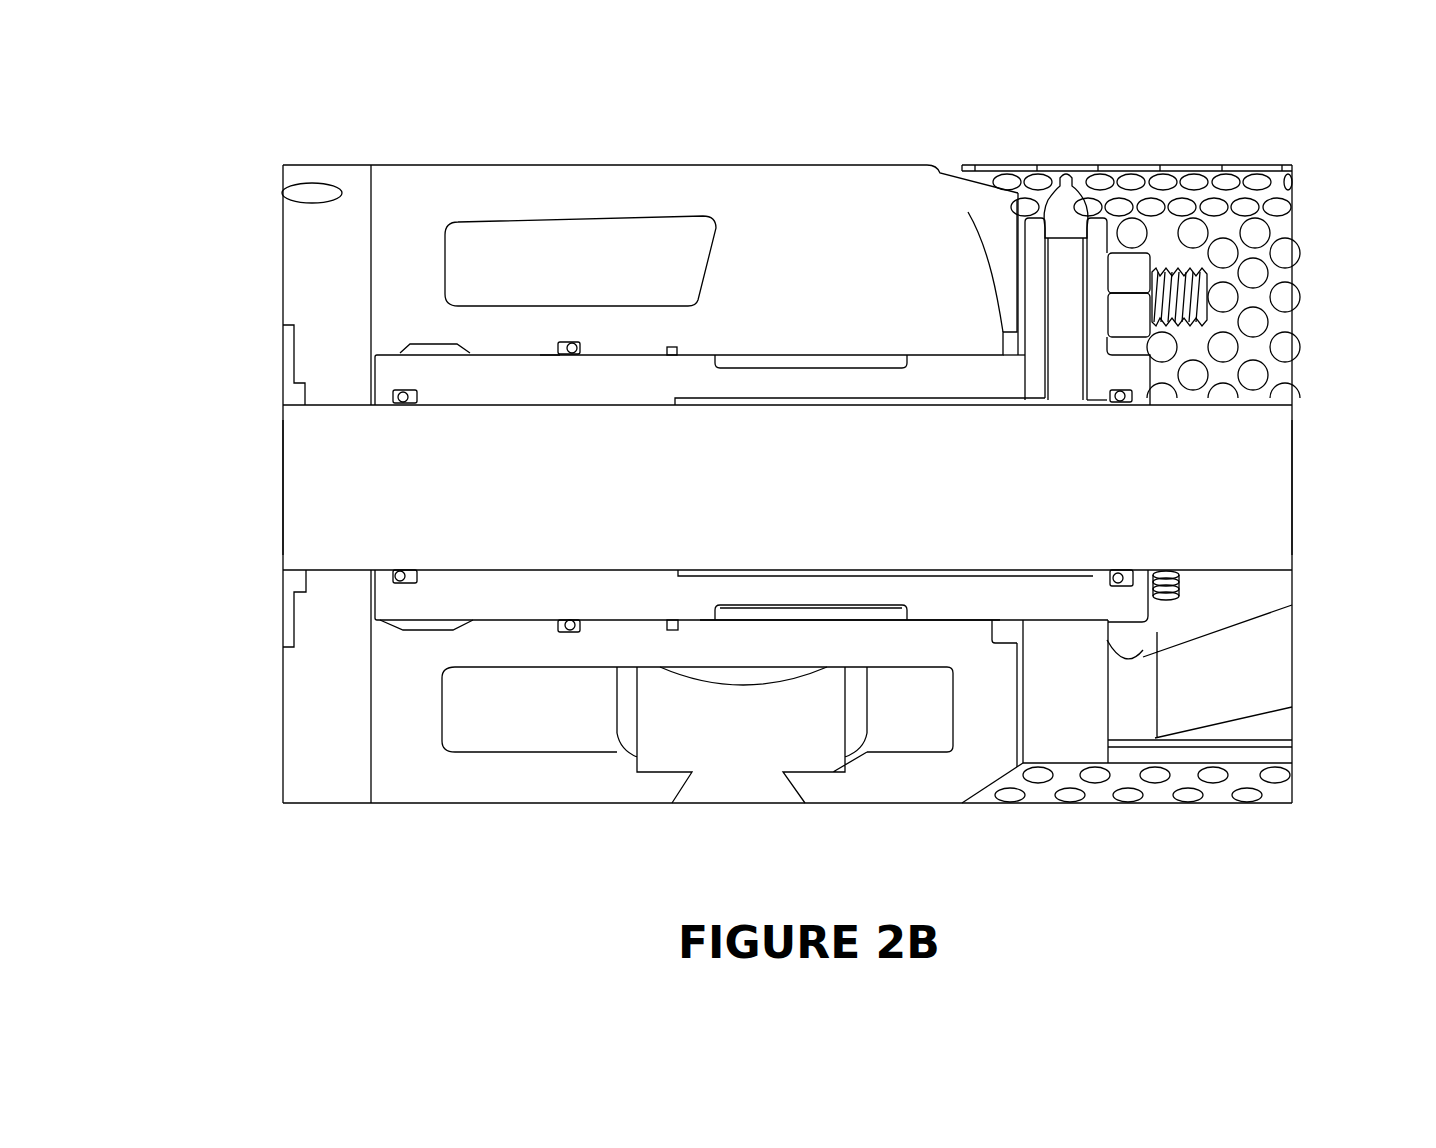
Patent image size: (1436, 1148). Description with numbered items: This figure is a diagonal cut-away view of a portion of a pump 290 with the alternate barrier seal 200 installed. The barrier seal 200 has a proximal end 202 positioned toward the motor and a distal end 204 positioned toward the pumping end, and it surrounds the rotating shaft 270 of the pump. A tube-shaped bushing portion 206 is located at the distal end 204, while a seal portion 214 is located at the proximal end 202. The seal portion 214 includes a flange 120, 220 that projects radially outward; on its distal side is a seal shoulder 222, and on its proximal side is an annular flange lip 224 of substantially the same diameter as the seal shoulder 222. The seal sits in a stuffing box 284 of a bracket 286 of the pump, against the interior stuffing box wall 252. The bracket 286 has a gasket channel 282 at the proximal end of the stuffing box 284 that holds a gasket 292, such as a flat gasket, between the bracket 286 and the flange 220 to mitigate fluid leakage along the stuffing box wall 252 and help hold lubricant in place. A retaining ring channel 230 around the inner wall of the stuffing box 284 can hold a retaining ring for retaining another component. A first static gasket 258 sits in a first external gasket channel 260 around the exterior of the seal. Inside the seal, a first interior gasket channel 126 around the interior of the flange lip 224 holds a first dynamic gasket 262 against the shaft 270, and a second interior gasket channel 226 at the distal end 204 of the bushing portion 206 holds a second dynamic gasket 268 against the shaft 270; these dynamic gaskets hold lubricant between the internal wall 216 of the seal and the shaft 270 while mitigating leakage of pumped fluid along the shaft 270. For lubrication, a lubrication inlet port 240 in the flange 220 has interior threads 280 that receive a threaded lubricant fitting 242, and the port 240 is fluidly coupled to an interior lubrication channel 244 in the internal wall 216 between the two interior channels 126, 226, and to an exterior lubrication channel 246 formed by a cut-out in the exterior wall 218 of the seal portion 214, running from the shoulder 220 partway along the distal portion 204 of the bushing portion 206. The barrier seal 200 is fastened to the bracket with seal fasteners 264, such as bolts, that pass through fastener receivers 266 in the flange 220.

The pump 290 is at (312, 118).
The barrier seal 200 is at (1258, 145).
The proximal end 202 is at (1305, 487).
The distal end 204 is at (270, 480).
The bushing portion 206 is at (518, 628).
The flange 120 is at (1080, 787).
The first interior gasket channel 126 is at (1116, 404).
The seal portion 214 is at (993, 703).
The internal wall 216 is at (1185, 606).
The exterior wall 218 is at (877, 632).
The flange 220 is at (1089, 729).
The seal shoulder 222 is at (990, 605).
The annular flange lip 224 is at (1130, 612).
The second interior gasket channel 226 is at (405, 403).
The retaining ring channel 230 is at (667, 634).
The lubrication inlet port 240 is at (1077, 255).
The lubricant fitting 242 is at (1064, 190).
The interior lubrication channel 244 is at (870, 573).
The exterior lubrication channel 246 is at (750, 605).
The stuffing box wall 252 is at (497, 353).
The first static gasket 258 is at (572, 342).
The first external gasket channel 260 is at (560, 356).
The first dynamic gasket 262 is at (1124, 402).
The seal fastener 264 is at (1133, 270).
The fastener receiver 266 is at (1165, 330).
The second dynamic gasket 268 is at (400, 570).
The rotating shaft 270 is at (617, 492).
The interior threads 280 is at (1045, 217).
The gasket channel 282 is at (1001, 333).
The stuffing box 284 is at (603, 343).
The bracket 286 is at (415, 785).
The gasket 292 is at (970, 225).